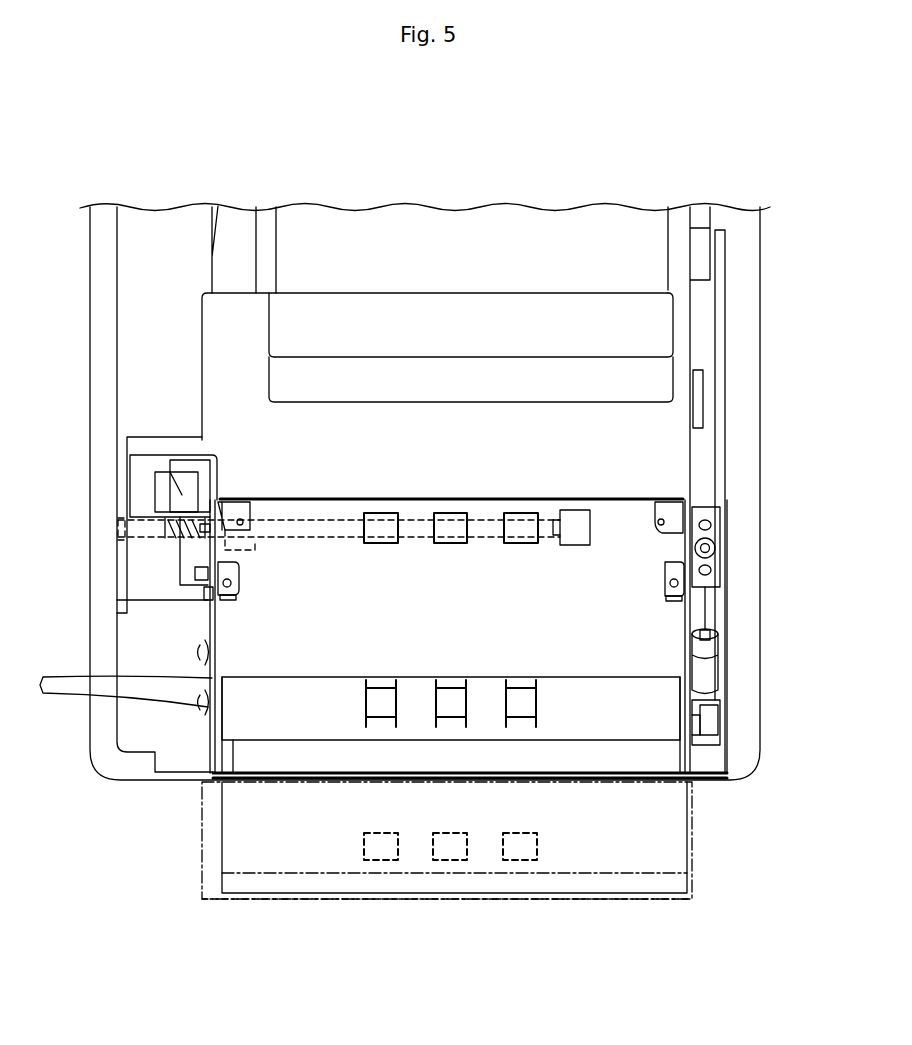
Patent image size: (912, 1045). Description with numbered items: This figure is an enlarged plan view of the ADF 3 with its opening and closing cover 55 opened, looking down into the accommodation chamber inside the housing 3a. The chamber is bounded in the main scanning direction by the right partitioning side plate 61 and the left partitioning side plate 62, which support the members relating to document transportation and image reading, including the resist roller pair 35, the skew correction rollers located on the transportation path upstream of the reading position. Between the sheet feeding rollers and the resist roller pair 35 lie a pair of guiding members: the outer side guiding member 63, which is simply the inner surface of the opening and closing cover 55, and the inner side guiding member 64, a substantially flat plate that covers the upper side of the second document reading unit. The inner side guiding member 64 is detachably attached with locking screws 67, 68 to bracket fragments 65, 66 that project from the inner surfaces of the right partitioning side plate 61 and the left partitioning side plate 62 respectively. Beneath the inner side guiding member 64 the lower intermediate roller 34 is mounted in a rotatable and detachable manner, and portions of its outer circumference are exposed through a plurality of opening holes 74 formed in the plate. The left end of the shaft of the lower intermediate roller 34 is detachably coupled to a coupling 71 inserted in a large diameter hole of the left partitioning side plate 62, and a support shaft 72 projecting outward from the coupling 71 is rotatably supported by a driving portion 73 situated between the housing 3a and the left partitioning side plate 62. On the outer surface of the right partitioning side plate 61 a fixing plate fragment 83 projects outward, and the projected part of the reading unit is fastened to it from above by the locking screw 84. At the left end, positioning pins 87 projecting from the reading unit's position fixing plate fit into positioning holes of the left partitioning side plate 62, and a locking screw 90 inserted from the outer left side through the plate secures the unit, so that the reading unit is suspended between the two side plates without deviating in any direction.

The ADF 3 is at (48, 210).
The housing 3a is at (753, 322).
The lower intermediate roller 34 is at (450, 525).
The resist roller pair 35 is at (535, 740).
The opening and closing cover 55 is at (425, 905).
The right partitioning side plate 61 is at (690, 617).
The left partitioning side plate 62 is at (213, 742).
The outer side guiding member 63 is at (255, 863).
The inner side guiding member 64 is at (317, 665).
The bracket fragment 65 is at (664, 575).
The bracket fragment 66 is at (240, 578).
The locking screw 67 is at (676, 601).
The locking screw 68 is at (229, 601).
The coupling 71 is at (258, 540).
The support shaft 72 is at (120, 538).
The driving portion 73 is at (180, 604).
The opening holes 74 is at (378, 520).
The fixing plate fragment 83 is at (717, 552).
The locking screw 84 is at (712, 525).
The positioning pins 87 is at (203, 520).
The locking screw 90 is at (204, 594).